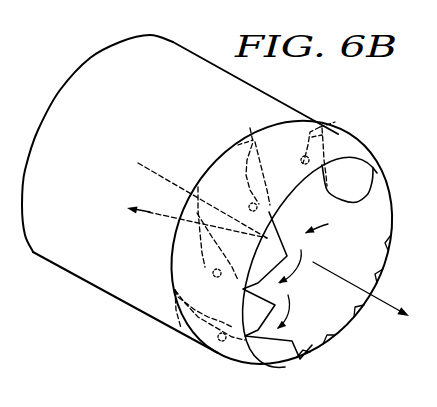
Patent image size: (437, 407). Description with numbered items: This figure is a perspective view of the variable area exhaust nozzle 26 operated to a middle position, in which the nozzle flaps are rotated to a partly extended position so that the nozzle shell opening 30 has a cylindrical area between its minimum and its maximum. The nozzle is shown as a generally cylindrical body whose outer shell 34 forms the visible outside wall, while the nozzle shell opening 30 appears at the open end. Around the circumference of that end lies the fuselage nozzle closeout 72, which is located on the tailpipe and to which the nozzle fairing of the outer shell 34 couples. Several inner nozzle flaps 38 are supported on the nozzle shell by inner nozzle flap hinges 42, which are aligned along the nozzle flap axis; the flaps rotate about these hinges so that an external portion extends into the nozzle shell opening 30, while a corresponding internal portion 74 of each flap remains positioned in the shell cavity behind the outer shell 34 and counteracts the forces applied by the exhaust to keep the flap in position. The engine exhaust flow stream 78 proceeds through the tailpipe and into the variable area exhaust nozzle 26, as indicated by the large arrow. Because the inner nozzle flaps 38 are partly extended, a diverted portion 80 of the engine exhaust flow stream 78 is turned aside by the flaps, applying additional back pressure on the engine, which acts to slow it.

The variable area exhaust nozzle 26 is at (180, 180).
The nozzle shell opening 30 is at (335, 314).
The outer shell 34 is at (165, 52).
The inner nozzle flaps 38 is at (305, 206).
The inner nozzle flap hinges 42 is at (336, 136).
The fuselage nozzle closeout 72 is at (374, 195).
The internal portion 74 is at (283, 135).
The engine exhaust flow stream 78 is at (393, 299).
The diverted portion 80 is at (150, 212).